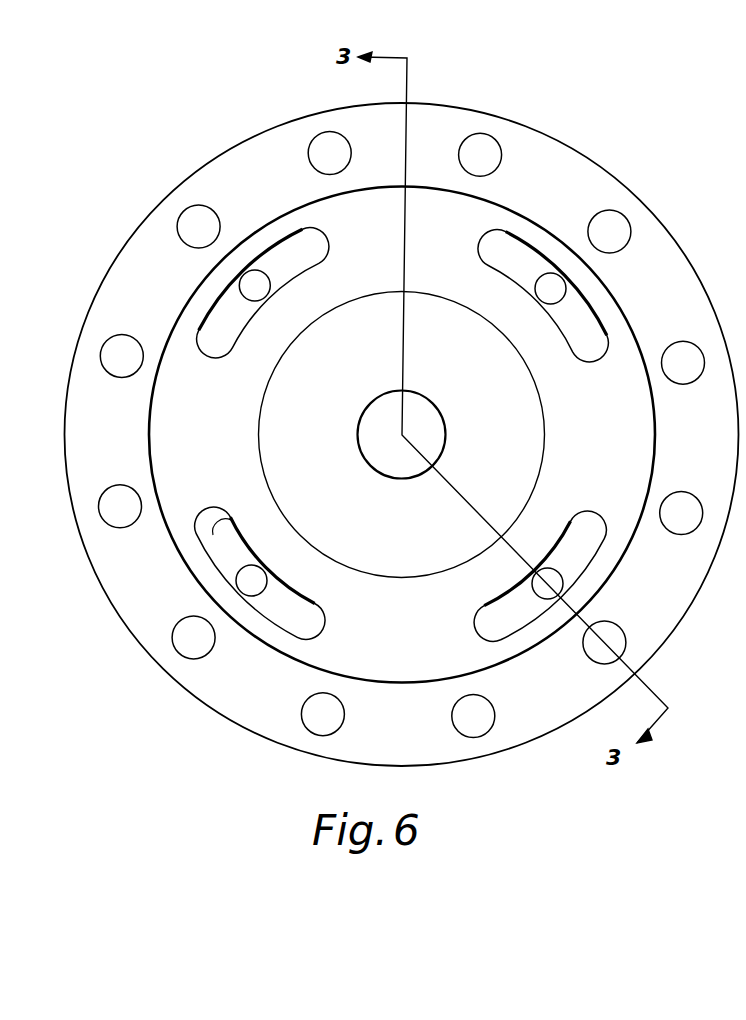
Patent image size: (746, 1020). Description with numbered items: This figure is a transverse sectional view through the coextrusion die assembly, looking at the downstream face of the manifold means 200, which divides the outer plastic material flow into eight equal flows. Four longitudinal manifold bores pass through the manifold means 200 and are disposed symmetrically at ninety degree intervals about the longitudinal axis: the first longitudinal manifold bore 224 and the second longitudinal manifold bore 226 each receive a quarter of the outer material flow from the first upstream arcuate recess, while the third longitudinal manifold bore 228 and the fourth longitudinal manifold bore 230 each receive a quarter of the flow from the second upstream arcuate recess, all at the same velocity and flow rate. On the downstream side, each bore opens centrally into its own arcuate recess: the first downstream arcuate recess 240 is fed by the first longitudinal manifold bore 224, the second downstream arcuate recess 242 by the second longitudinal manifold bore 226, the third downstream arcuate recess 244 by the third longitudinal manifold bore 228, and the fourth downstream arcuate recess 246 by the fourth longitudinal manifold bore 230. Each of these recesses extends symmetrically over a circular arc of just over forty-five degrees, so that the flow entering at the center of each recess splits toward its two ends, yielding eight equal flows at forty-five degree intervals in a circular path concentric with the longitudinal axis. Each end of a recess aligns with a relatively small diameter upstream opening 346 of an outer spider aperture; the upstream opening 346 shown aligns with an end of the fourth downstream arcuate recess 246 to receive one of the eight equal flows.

The manifold means 200 is at (580, 146).
The first longitudinal manifold bore 224 is at (252, 289).
The second longitudinal manifold bore 226 is at (556, 290).
The third longitudinal manifold bore 228 is at (553, 585).
The fourth longitudinal manifold bore 230 is at (256, 580).
The first downstream arcuate recess 240 is at (313, 253).
The second downstream arcuate recess 242 is at (592, 357).
The third downstream arcuate recess 244 is at (580, 538).
The fourth downstream arcuate recess 246 is at (317, 620).
The upstream opening 346 is at (246, 514).